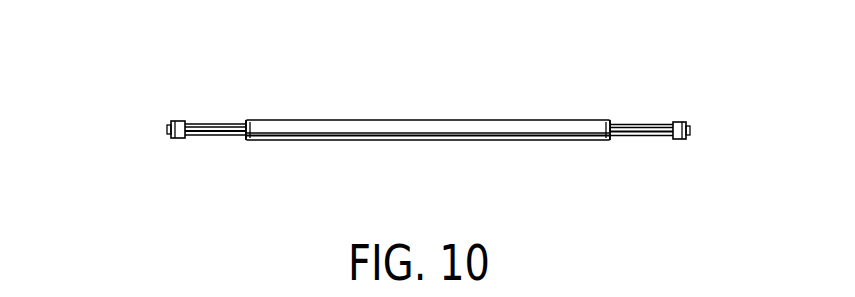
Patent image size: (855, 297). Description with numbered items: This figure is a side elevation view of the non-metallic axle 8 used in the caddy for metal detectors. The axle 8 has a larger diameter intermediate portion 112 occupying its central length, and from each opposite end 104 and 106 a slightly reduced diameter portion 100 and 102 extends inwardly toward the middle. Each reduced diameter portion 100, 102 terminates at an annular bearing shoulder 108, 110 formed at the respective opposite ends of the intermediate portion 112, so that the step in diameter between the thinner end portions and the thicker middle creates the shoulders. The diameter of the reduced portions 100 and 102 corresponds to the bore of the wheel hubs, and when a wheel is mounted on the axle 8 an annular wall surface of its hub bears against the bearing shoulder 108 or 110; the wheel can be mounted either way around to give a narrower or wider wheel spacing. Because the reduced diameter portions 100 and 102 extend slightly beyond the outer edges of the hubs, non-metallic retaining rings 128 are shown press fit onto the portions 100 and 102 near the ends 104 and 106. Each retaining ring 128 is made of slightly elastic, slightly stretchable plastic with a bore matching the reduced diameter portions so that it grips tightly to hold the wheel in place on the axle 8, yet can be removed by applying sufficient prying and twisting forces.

The non-metallic axle 8 is at (417, 133).
The reduced diameter portion 100 is at (210, 136).
The reduced diameter portion 102 is at (645, 139).
The end 104 is at (168, 130).
The end 106 is at (691, 131).
The annular bearing shoulder 108 is at (243, 138).
The annular bearing shoulder 110 is at (613, 124).
The intermediate portion 112 is at (415, 139).
The retaining ring 128 is at (179, 121).